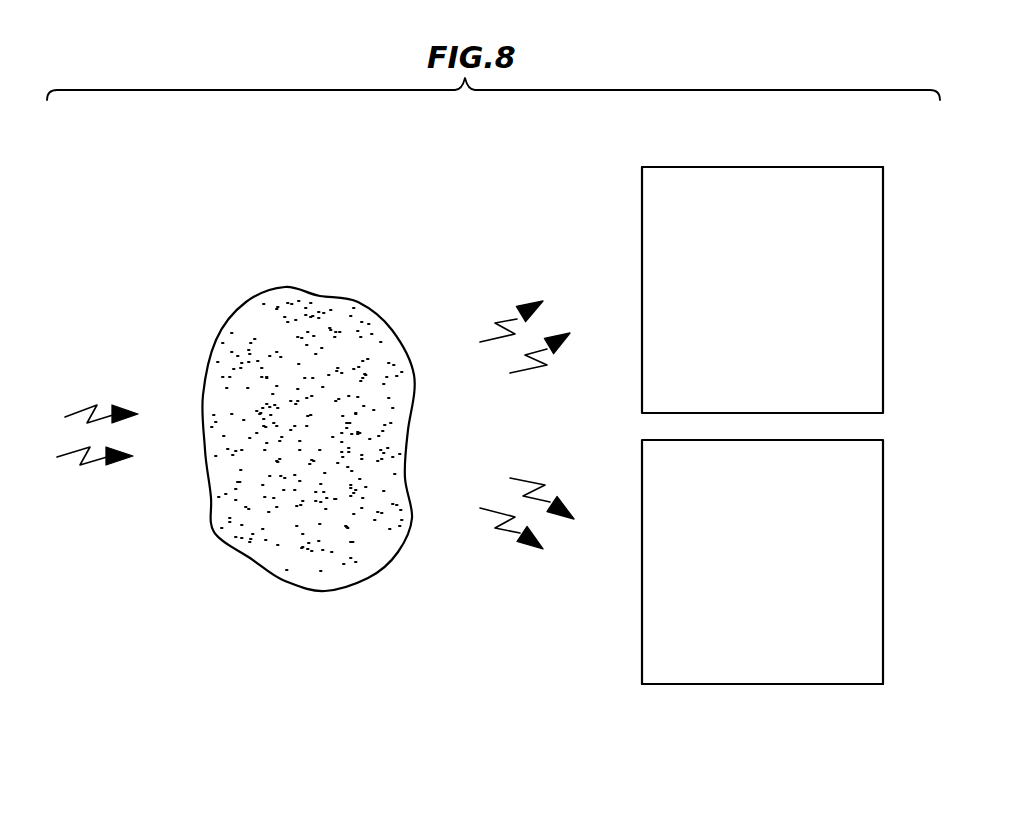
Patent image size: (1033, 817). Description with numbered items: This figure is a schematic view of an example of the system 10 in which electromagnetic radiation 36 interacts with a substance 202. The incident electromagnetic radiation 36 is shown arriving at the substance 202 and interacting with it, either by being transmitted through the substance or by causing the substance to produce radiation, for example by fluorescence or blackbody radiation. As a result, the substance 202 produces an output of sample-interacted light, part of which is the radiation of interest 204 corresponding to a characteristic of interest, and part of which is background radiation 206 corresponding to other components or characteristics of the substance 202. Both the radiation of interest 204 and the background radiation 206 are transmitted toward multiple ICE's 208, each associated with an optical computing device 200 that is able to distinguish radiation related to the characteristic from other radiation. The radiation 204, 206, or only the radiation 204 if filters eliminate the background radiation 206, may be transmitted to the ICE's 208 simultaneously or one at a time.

The system 10 is at (178, 190).
The electromagnetic radiation 36 is at (88, 405).
The substance 202 is at (320, 293).
The electromagnetic radiation corresponding to a characteristic of interest 204 is at (498, 320).
The background electromagnetic radiation 206 is at (518, 375).
The optical computing device 200 is at (854, 156).
The ICE 208 is at (733, 167).